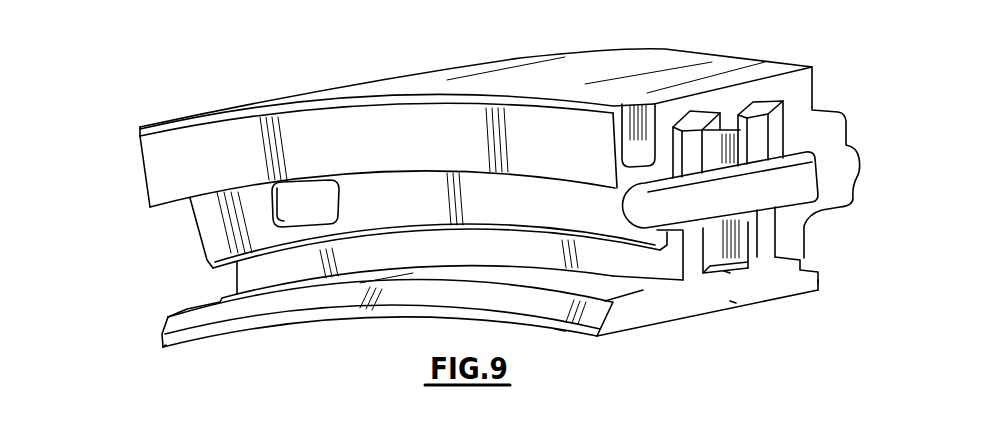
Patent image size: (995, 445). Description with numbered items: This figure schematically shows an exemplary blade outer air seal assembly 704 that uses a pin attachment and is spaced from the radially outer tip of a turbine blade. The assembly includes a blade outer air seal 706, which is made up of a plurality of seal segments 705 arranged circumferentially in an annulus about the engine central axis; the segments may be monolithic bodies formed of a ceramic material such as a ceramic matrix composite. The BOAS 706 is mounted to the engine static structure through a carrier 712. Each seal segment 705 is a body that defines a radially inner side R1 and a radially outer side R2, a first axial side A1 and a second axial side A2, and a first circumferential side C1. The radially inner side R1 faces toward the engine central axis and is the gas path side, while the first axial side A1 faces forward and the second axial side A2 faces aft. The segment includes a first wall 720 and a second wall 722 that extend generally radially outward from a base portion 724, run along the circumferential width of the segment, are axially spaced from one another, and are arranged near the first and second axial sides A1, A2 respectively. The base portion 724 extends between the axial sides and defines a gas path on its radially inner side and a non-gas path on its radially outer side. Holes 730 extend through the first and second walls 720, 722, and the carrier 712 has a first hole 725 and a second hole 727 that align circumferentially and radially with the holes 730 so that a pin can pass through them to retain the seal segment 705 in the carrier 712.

The blade outer air seal assembly 704 is at (140, 77).
The carrier 712 is at (710, 78).
The first hole 725 is at (628, 230).
The seal segment 705 is at (643, 292).
The second hole 727 is at (287, 228).
The blade outer air seal 706 is at (187, 324).
The first circumferential side C1 is at (164, 349).
The first axial side A1 is at (560, 330).
The first wall 720 is at (683, 262).
The hole 730 is at (700, 230).
The second wall 722 is at (763, 238).
The base portion 724 is at (720, 297).
The radially inner side R1 is at (733, 303).
The radially outer side R2 is at (727, 272).
The second axial side A2 is at (819, 282).